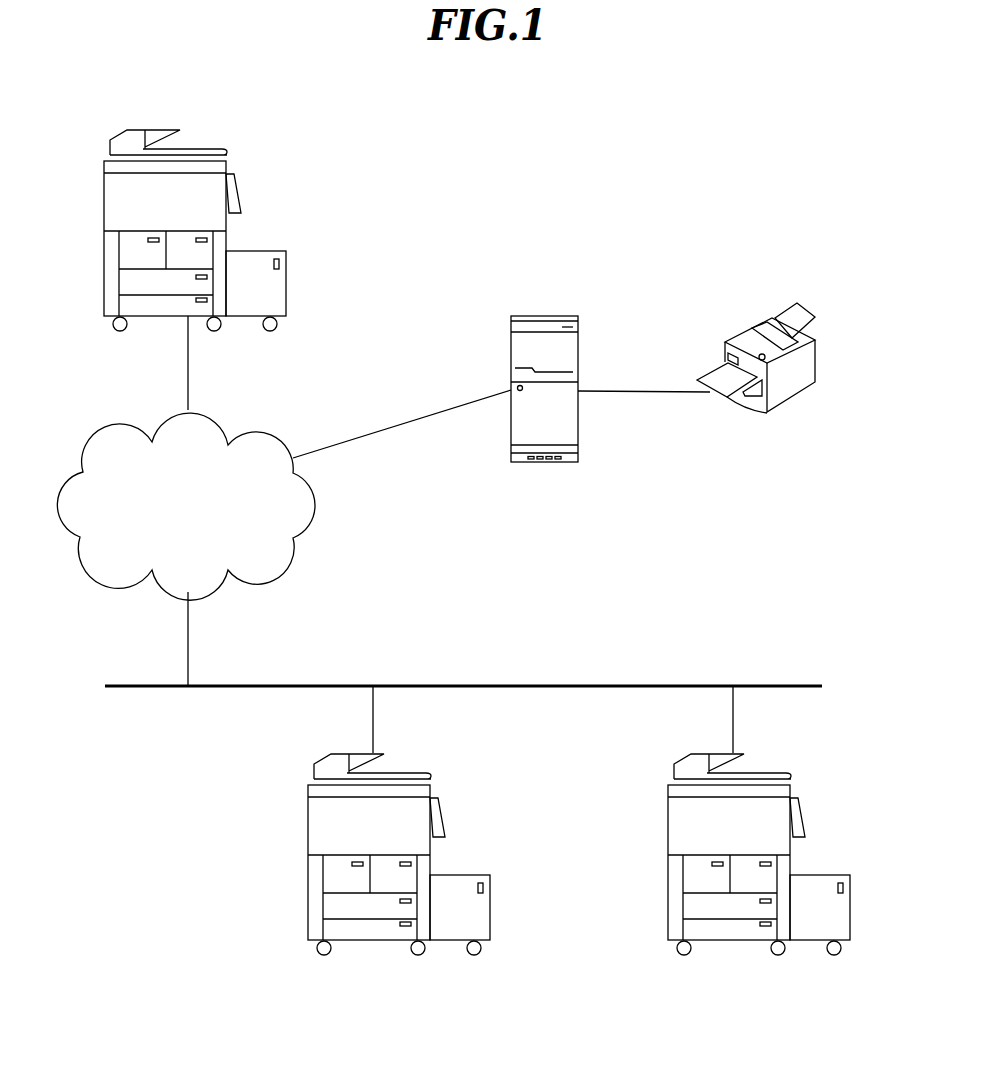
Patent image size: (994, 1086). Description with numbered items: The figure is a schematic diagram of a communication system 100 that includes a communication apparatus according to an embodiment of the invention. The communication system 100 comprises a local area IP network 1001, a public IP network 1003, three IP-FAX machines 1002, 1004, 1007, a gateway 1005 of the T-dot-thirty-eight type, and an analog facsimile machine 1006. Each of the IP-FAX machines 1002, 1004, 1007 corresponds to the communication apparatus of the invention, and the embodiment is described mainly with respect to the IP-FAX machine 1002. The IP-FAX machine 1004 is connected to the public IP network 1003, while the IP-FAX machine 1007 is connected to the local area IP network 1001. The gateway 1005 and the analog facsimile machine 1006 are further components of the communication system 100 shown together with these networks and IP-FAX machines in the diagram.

The communication system 100 is at (460, 156).
The local area IP network 1001 is at (403, 683).
The IP-FAX machine 1002 is at (413, 762).
The public IP network 1003 is at (107, 432).
The IP-FAX machine 1004 is at (207, 146).
The T.38 gateway 1005 is at (541, 315).
The analog facsimile machine 1006 is at (747, 331).
The IP-FAX machine 1007 is at (773, 762).